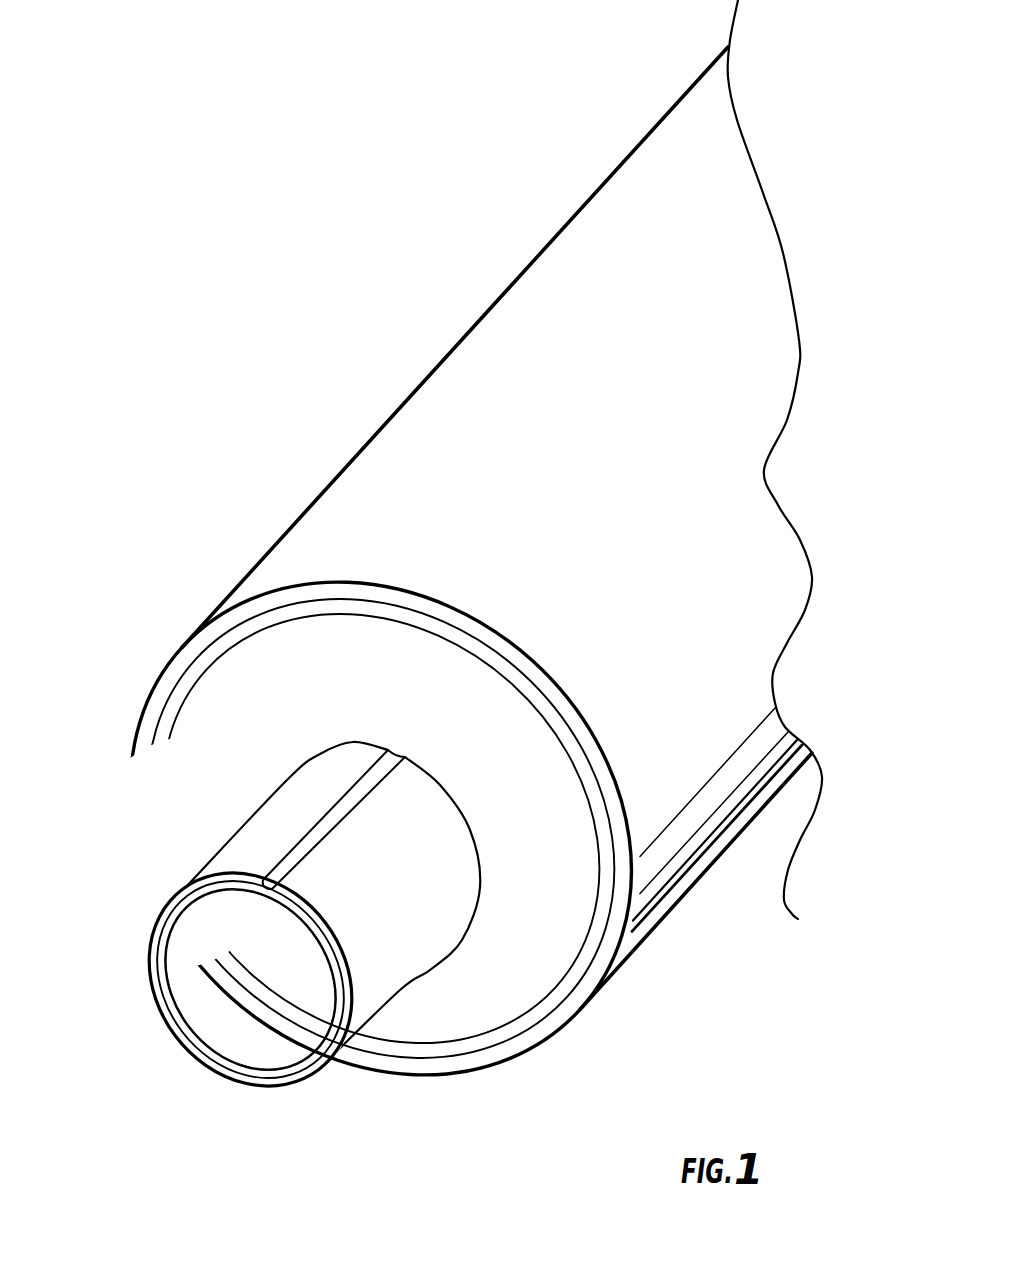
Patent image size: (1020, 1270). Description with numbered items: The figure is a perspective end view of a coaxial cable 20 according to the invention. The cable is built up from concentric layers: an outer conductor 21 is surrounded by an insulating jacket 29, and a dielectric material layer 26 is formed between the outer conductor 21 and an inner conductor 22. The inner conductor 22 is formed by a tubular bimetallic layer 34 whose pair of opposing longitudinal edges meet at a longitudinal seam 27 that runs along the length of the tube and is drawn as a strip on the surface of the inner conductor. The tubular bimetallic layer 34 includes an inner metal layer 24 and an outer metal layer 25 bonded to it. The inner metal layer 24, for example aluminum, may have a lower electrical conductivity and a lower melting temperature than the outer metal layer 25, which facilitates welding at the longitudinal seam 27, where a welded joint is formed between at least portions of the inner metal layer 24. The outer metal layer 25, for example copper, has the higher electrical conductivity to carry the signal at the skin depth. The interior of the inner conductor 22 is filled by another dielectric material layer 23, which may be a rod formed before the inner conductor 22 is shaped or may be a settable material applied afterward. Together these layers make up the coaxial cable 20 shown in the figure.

The coaxial cable 20 is at (244, 448).
The outer conductor 21 is at (213, 660).
The inner conductor 22 is at (401, 940).
The another dielectric material layer 23 is at (250, 1032).
The inner metal layer 24 is at (180, 1020).
The outer metal layer 25 is at (152, 955).
The dielectric material layer 26 is at (538, 960).
The longitudinal seam 27 is at (307, 826).
The insulating jacket 29 is at (373, 1063).
The tubular bimetallic layer 34 is at (155, 905).